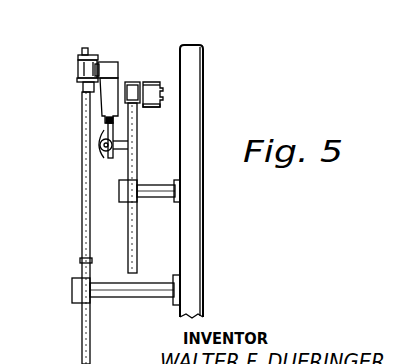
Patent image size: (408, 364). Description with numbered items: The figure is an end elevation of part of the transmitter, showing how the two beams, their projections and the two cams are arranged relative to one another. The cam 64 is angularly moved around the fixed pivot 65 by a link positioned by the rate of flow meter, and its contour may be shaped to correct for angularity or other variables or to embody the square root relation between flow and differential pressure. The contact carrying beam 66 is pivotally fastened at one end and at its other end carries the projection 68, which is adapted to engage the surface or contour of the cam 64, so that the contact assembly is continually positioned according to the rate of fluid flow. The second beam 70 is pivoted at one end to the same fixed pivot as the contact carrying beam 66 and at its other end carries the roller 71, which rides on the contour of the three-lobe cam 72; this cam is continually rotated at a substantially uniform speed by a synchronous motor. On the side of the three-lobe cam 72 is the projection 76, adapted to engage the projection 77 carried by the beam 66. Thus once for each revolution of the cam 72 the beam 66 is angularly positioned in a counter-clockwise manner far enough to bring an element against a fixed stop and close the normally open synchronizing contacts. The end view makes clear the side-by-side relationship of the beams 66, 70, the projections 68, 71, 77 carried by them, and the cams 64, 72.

The cam 64 is at (82, 155).
The fixed pivot 65 is at (72, 290).
The contact carrying beam 66 is at (105, 62).
The projection 68 is at (81, 88).
The second beam 70 is at (150, 107).
The roller 71 is at (150, 82).
The three-lobe cam 72 is at (138, 160).
The projection 76 is at (101, 150).
The projection 77 is at (131, 80).